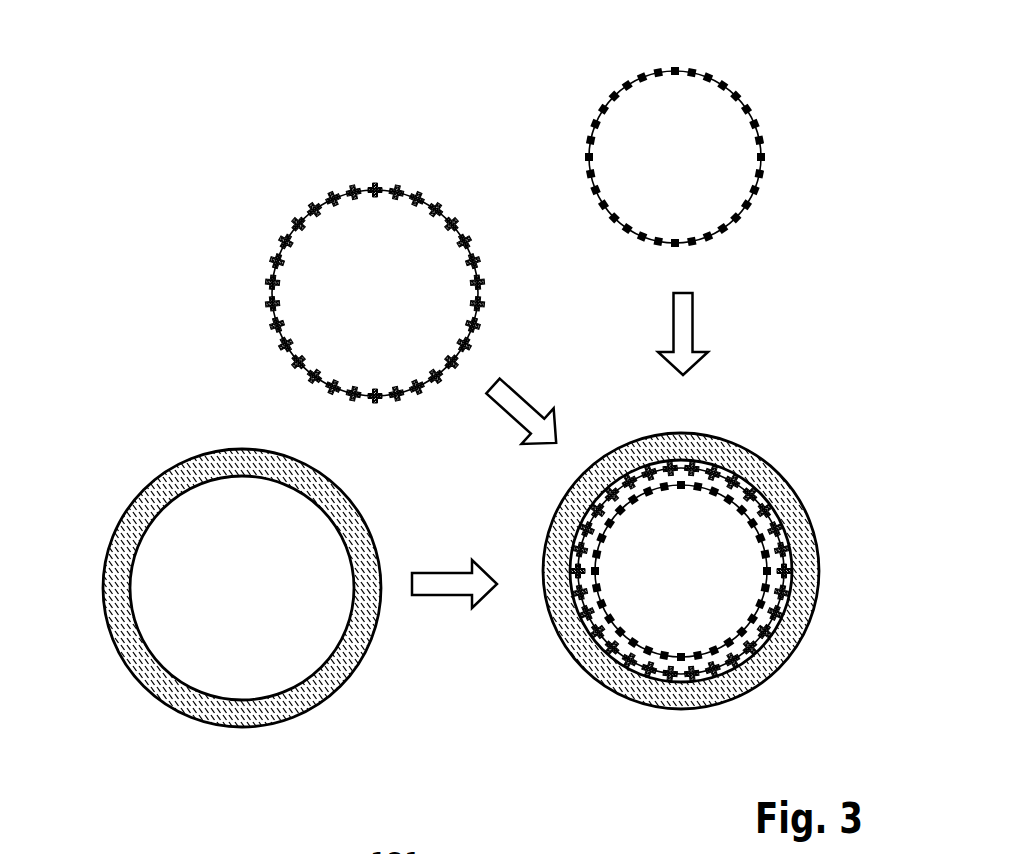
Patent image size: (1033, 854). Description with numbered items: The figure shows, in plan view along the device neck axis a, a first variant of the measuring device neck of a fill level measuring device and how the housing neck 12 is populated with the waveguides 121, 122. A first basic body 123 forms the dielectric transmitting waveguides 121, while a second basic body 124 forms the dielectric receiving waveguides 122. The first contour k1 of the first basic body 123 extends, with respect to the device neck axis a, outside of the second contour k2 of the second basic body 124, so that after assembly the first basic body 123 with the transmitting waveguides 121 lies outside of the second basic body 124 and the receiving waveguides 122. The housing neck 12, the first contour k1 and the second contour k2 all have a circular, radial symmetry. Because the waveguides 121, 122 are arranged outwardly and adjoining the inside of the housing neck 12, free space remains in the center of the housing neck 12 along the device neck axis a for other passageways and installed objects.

The housing neck 12 is at (123, 655).
The transmitting waveguides 121 is at (470, 317).
The receiving waveguides 122 is at (763, 163).
The first basic body 123 is at (199, 267).
The second basic body 124 is at (760, 79).
The first contour k1 is at (294, 230).
The second contour k2 is at (590, 138).
The device neck axis a is at (243, 591).